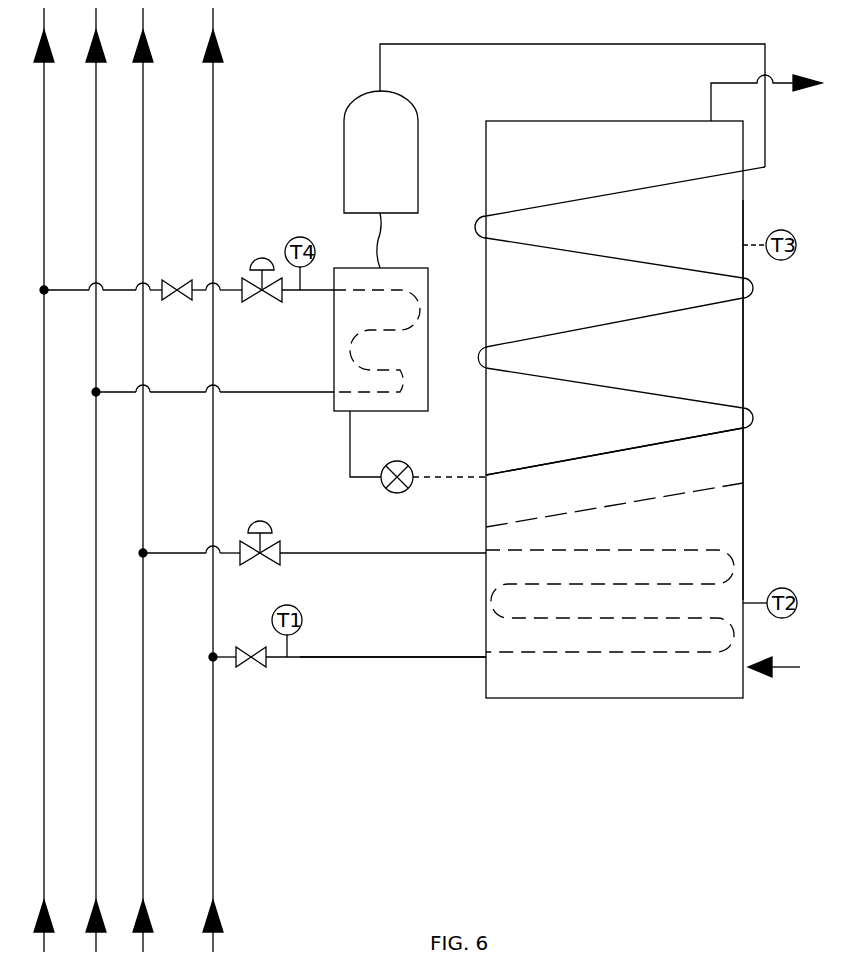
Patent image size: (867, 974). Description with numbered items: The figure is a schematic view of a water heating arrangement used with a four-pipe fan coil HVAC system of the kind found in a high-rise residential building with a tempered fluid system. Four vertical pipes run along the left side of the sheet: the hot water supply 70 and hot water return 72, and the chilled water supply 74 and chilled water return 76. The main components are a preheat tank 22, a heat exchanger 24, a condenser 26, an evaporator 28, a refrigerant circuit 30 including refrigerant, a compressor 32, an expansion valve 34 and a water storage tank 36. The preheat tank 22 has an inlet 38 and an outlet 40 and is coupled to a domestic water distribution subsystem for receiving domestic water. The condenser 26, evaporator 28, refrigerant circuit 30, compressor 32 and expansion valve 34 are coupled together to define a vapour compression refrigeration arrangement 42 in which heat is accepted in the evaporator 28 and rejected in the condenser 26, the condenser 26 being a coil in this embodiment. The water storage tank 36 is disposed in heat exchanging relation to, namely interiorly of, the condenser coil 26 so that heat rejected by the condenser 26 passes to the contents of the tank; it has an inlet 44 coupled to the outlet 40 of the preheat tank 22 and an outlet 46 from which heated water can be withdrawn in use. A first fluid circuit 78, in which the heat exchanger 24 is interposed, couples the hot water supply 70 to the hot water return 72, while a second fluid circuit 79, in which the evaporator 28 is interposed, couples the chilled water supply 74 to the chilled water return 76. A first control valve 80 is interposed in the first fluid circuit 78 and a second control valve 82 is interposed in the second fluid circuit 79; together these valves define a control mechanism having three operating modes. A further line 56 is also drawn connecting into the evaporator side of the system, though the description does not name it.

The preheat tank 22 is at (514, 724).
The heat exchanger 24 is at (610, 601).
The condenser 26 is at (580, 249).
The evaporator 28 is at (334, 340).
The refrigerant circuit 30 is at (350, 450).
The compressor 32 is at (348, 110).
The expansion valve 34 is at (410, 463).
The water storage tank 36 is at (746, 358).
The inlet 38 is at (792, 686).
The outlet 40 is at (724, 498).
The vapour compression refrigeration arrangement 42 is at (382, 492).
The inlet 44 is at (728, 466).
The outlet 46 is at (781, 72).
The return line 56 is at (213, 381).
The hot water supply 70 is at (213, 810).
The hot water return 72 is at (143, 810).
The chilled water supply 74 is at (96, 773).
The chilled water return 76 is at (44, 773).
The first fluid circuit 78 is at (412, 672).
The second fluid circuit 79 is at (322, 288).
The first control valve 80 is at (312, 529).
The second control valve 82 is at (268, 305).